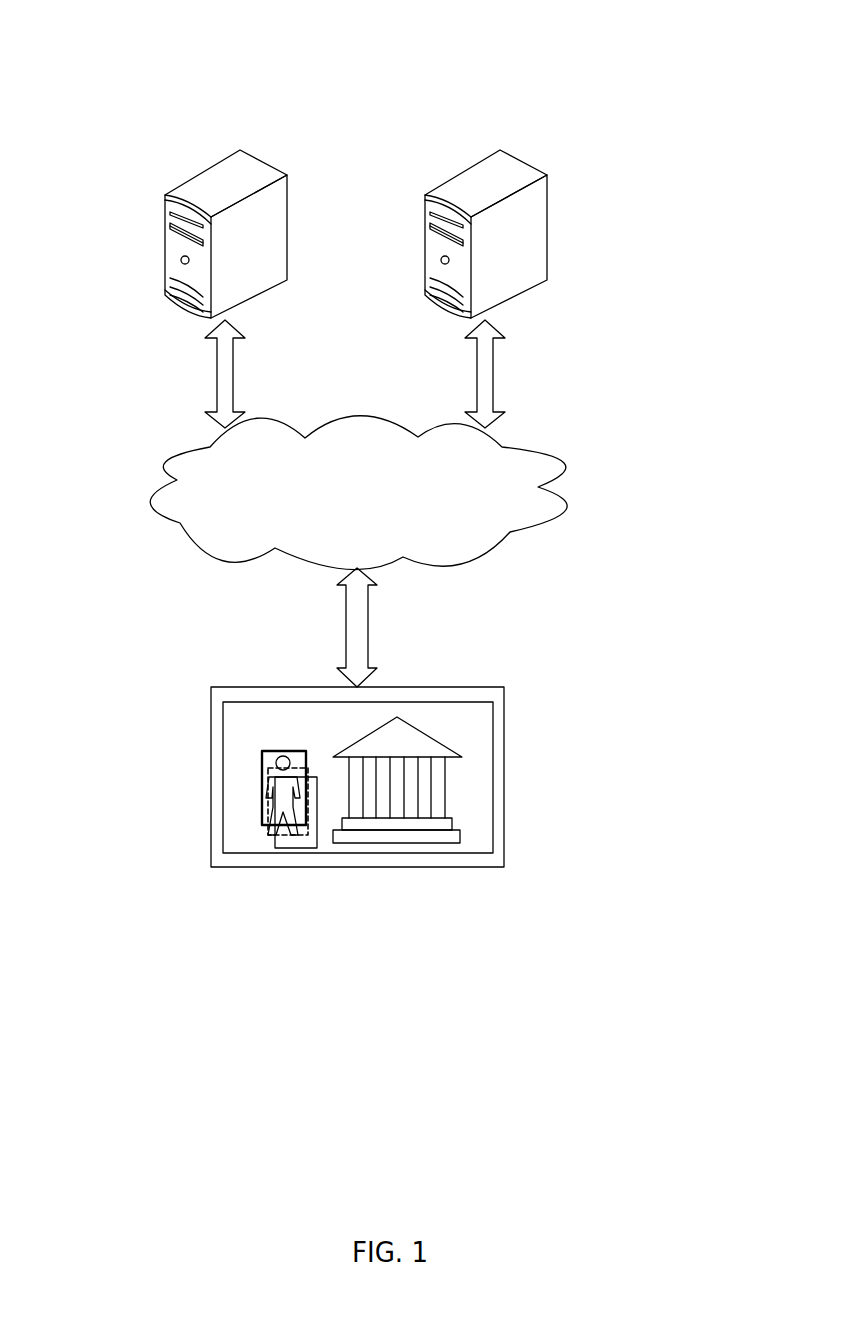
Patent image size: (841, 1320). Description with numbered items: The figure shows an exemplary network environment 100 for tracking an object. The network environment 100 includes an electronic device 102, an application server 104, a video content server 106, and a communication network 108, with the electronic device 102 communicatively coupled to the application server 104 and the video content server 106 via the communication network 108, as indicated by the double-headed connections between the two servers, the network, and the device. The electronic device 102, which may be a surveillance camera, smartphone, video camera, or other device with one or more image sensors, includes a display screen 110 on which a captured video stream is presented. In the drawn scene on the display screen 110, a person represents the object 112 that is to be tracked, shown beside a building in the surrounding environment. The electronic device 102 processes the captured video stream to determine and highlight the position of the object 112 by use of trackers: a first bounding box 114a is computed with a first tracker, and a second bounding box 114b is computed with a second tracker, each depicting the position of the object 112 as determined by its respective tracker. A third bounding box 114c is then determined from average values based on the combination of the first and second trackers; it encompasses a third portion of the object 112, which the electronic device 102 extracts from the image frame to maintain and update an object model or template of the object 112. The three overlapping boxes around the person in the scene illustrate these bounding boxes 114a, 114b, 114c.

The network environment 100 is at (590, 87).
The electronic device 102 is at (313, 765).
The application server 104 is at (167, 192).
The video content server 106 is at (547, 175).
The communication network 108 is at (507, 506).
The display screen 110 is at (223, 703).
The object 112 is at (263, 793).
The first bounding box 114a is at (263, 822).
The second bounding box 114b is at (317, 840).
The third bounding box 114c is at (288, 838).